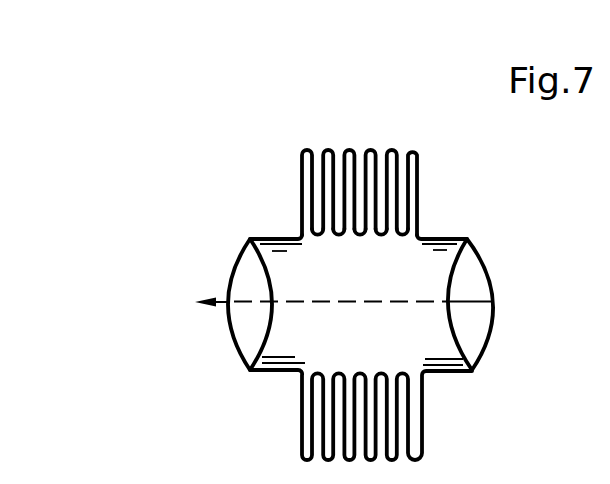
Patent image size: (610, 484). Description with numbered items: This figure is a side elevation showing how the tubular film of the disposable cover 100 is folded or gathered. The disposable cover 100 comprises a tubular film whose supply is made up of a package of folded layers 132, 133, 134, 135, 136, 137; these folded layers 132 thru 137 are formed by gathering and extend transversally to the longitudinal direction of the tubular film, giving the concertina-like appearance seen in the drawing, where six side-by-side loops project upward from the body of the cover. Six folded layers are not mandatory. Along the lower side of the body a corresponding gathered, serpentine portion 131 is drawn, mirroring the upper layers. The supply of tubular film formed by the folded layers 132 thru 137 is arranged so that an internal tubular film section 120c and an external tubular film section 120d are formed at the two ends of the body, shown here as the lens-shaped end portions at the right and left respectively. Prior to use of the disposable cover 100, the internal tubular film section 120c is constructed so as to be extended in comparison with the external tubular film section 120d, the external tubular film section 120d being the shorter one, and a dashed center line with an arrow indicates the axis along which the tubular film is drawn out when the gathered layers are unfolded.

The disposable cover 100 is at (452, 199).
The internal tubular film section 120c is at (462, 237).
The external tubular film section 120d is at (263, 237).
The lower corrugated fin section 131 is at (296, 427).
The folded layer 132 is at (306, 151).
The folded layer 133 is at (328, 151).
The folded layer 134 is at (350, 151).
The folded layer 135 is at (371, 151).
The folded layer 136 is at (392, 151).
The folded layer 137 is at (414, 151).